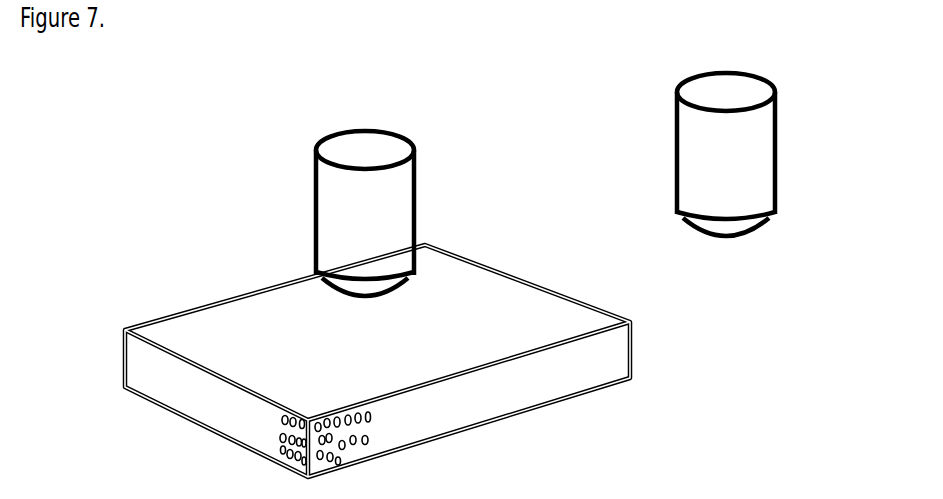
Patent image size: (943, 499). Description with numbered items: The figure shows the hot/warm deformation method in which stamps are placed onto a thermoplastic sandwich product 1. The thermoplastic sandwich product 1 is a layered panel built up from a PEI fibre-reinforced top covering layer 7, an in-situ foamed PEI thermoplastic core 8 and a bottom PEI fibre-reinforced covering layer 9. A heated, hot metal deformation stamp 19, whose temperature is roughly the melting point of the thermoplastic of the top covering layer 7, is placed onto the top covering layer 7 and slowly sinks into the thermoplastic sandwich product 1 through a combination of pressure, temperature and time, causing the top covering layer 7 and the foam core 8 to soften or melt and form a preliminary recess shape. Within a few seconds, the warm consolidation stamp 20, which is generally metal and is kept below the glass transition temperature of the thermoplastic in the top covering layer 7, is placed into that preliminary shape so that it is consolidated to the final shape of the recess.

The thermoplastic sandwich product 1 is at (172, 325).
The top covering layer 7 is at (640, 316).
The in-situ foamed PEI thermoplastic core 8 is at (645, 345).
The bottom covering layer 9 is at (652, 375).
The hot deformation stamp 19 is at (406, 183).
The consolidation stamp 20 is at (756, 142).